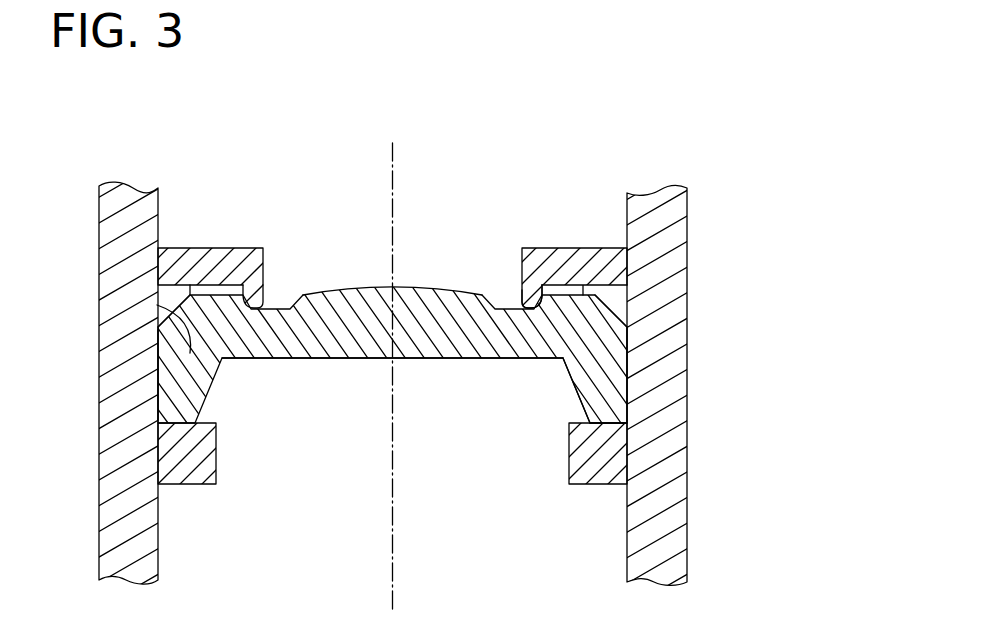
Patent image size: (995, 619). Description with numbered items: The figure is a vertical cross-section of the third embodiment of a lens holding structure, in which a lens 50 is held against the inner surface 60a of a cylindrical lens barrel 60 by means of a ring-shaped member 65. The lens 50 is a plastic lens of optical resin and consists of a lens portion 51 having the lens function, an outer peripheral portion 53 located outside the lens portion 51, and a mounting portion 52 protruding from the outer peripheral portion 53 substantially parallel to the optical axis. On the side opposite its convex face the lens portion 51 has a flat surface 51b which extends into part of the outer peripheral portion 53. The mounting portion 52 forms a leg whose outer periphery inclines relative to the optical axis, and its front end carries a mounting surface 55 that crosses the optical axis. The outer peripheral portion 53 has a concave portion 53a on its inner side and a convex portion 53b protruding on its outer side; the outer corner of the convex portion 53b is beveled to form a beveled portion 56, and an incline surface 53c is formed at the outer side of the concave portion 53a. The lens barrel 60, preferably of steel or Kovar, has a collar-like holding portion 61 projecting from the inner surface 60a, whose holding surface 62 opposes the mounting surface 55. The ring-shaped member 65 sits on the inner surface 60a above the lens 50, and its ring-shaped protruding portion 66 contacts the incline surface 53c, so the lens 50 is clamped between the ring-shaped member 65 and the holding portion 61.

The lens 50 is at (409, 264).
The lens portion 51 is at (349, 304).
The flat surface 51b is at (302, 360).
The mounting portion 52 is at (612, 383).
The outer peripheral portion 53 is at (558, 292).
The concave portion 53a is at (272, 308).
The convex portion 53b is at (580, 290).
The incline surface 53c is at (525, 305).
The mounting surface 55 is at (177, 425).
The beveled portion 56 is at (157, 305).
The lens barrel 60 is at (676, 331).
The inner surface 60a is at (160, 393).
The holding portion 61 is at (605, 468).
The holding surface 62 is at (590, 421).
The ring-shaped member 65 is at (208, 243).
The protruding portion 66 is at (190, 353).